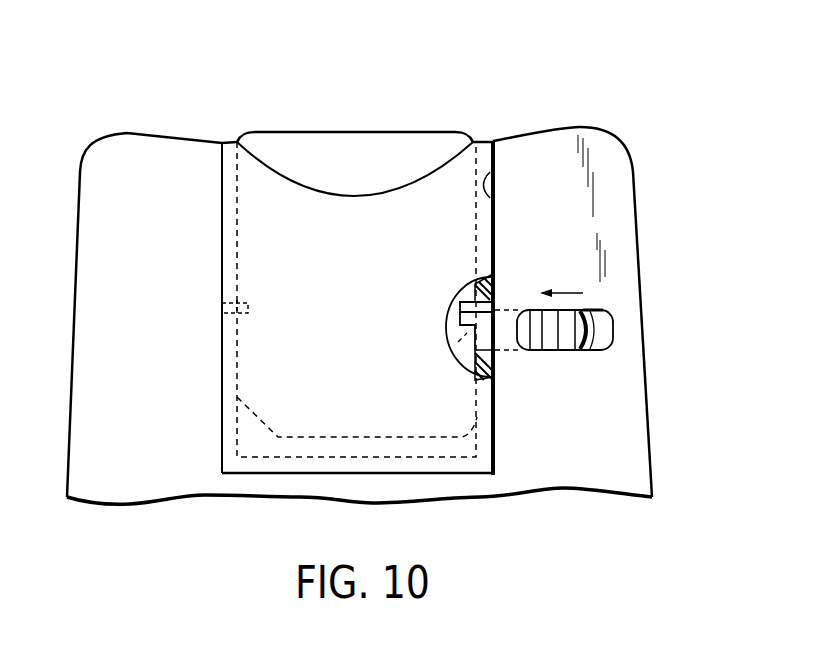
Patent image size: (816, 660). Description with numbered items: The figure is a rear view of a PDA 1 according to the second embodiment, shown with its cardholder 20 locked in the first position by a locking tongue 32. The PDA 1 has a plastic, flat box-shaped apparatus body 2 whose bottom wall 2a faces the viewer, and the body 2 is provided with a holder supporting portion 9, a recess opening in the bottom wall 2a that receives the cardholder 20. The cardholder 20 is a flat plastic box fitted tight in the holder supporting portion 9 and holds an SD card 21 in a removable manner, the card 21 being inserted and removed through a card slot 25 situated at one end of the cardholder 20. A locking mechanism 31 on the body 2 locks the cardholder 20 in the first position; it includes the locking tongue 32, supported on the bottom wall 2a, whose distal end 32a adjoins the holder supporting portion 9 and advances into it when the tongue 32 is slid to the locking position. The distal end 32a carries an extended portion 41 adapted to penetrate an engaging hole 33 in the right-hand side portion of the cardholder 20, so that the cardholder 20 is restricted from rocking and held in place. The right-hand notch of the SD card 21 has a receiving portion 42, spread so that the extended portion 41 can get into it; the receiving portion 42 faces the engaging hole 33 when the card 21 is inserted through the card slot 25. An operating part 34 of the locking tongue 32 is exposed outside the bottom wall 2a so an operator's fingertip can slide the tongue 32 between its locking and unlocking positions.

The PDA 1 is at (630, 103).
The apparatus body 2 is at (124, 149).
The bottom wall 2a is at (627, 450).
The holder supporting portion 9 is at (491, 168).
The cardholder 20 is at (287, 360).
The SD card 21 is at (410, 142).
The card slot 25 is at (317, 190).
The locking mechanism 31 is at (612, 298).
The locking tongue 32 is at (505, 320).
The distal end 32a is at (452, 350).
The engaging hole 33 is at (491, 350).
The operating part 34 is at (590, 328).
The extended portion 41 is at (462, 312).
The receiving portion 42 is at (470, 325).